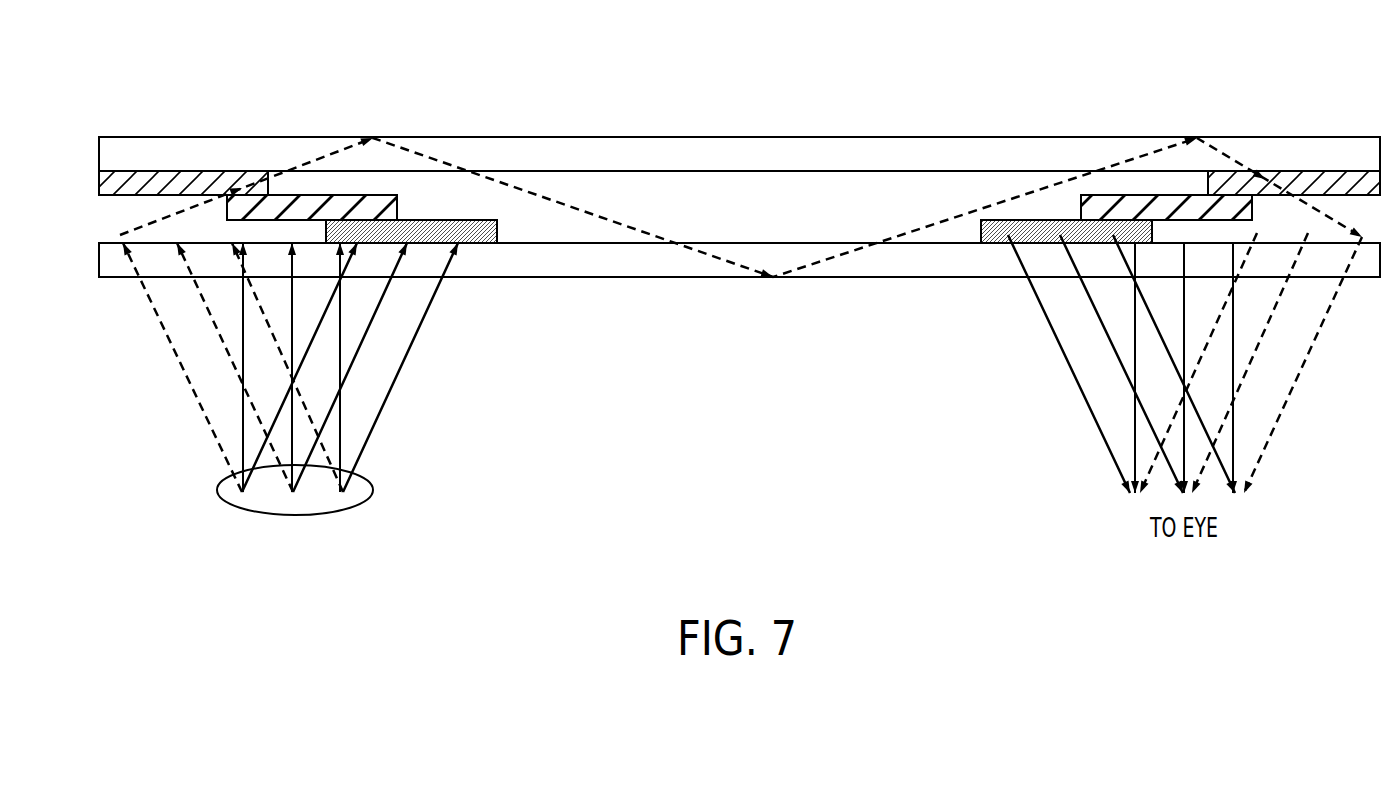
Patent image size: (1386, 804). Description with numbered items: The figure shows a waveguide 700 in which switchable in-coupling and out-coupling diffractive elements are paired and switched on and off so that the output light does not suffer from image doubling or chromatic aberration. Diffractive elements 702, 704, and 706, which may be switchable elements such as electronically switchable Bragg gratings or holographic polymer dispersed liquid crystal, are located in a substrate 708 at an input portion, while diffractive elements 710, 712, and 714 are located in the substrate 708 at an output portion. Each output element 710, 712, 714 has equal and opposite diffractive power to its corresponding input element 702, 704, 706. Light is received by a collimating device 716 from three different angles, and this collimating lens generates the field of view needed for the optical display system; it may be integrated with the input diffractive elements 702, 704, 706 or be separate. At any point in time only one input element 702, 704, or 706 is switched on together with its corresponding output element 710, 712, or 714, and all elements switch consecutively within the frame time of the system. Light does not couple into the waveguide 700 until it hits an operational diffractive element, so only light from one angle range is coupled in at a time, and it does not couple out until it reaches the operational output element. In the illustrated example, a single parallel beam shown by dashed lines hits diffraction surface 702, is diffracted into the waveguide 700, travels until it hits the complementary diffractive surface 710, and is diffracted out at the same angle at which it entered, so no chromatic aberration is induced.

The waveguide 700 is at (890, 60).
The diffractive element 702 is at (140, 178).
The diffractive element 704 is at (285, 205).
The diffractive element 706 is at (435, 230).
The substrate 708 is at (640, 150).
The diffractive element 710 is at (1317, 180).
The diffractive element 712 is at (1158, 203).
The diffractive element 714 is at (1032, 228).
The collimating device 716 is at (315, 502).